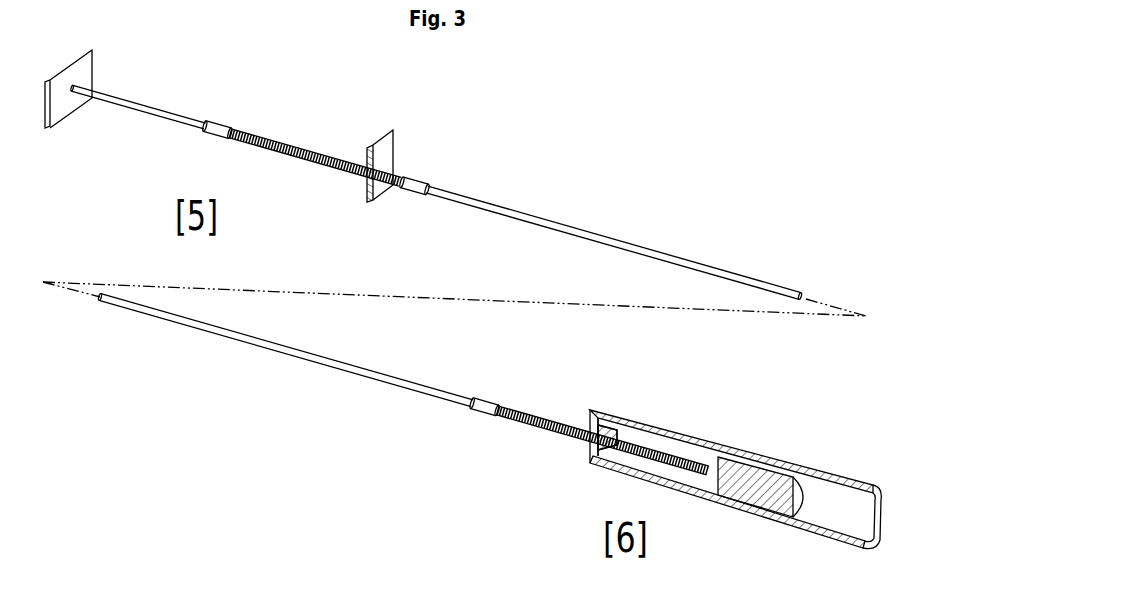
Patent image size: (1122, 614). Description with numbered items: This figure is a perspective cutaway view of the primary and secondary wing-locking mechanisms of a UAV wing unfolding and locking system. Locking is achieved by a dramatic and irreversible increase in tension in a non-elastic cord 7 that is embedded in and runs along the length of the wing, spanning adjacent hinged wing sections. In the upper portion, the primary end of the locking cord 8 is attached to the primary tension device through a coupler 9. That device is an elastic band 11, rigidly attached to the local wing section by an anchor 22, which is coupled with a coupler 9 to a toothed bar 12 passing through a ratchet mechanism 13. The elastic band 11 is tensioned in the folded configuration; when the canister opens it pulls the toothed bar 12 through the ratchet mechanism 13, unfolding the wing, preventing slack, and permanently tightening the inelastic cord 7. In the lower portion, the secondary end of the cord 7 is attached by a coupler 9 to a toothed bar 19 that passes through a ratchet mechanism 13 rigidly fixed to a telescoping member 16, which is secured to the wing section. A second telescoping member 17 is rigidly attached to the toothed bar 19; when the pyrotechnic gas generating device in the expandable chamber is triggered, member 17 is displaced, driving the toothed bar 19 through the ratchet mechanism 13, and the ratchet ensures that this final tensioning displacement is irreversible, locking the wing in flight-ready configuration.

The non-elastic cord 7 is at (553, 227).
The primary end of the locking cord 8 is at (482, 192).
The coupler 9 is at (218, 130).
The elastic band 11 is at (100, 103).
The toothed bar 12 is at (288, 158).
The ratchet mechanism 13 is at (390, 160).
The telescoping member 16 is at (840, 523).
The telescoping member 17 is at (806, 498).
The toothed bar 19 is at (558, 423).
The anchor 22 is at (91, 67).